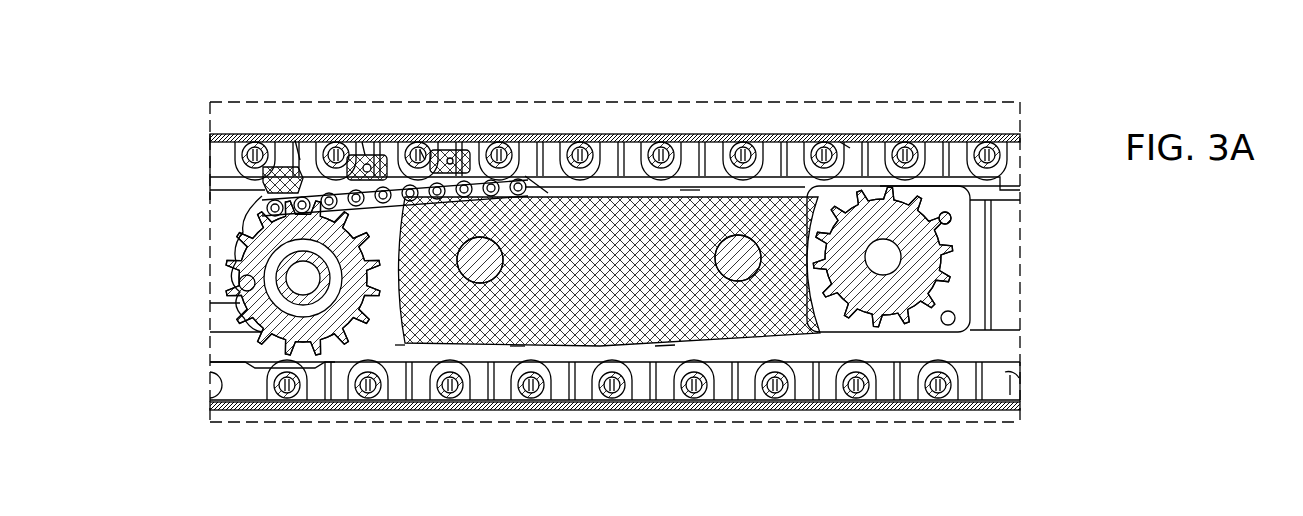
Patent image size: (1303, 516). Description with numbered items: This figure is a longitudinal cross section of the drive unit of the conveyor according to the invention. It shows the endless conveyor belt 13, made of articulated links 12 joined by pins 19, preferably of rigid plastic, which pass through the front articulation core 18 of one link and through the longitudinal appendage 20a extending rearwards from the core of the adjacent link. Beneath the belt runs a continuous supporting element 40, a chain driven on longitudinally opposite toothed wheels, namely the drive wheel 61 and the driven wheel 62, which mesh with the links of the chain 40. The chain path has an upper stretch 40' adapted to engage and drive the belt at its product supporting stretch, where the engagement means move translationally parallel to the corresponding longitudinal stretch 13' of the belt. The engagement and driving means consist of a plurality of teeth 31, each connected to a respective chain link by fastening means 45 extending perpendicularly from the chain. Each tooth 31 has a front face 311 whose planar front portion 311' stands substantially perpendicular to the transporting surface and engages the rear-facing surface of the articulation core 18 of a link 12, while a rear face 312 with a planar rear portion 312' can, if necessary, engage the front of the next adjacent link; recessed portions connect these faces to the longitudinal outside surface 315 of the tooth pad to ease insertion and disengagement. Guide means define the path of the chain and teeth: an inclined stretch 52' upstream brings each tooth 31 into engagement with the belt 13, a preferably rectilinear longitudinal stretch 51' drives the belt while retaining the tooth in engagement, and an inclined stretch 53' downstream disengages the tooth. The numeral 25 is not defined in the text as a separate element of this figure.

The link 12 is at (907, 130).
The conveyor belt 13 is at (615, 105).
The longitudinal stretch of the conveyor belt 13' is at (615, 253).
The articulation core 18 is at (912, 140).
The pin 19 is at (915, 138).
The longitudinal appendage 20a is at (862, 136).
The chain 25 is at (552, 180).
The engagement tooth 31 is at (295, 140).
The front face 311 is at (222, 182).
The front portion 311' is at (259, 208).
The rear face 312 is at (347, 104).
The rear portion 312' is at (450, 107).
The longitudinal outside surface 315 is at (283, 165).
The continuous supporting element 40 is at (195, 264).
The stretch of the continuous supporting element 40' is at (615, 121).
The fastening means 45 is at (782, 192).
The longitudinal stretch 51' is at (679, 116).
The inclined engagement stretch 52' is at (834, 100).
The inclined disengagement stretch 53' is at (520, 117).
The drive wheel 61 is at (245, 310).
The driven wheel 62 is at (960, 290).